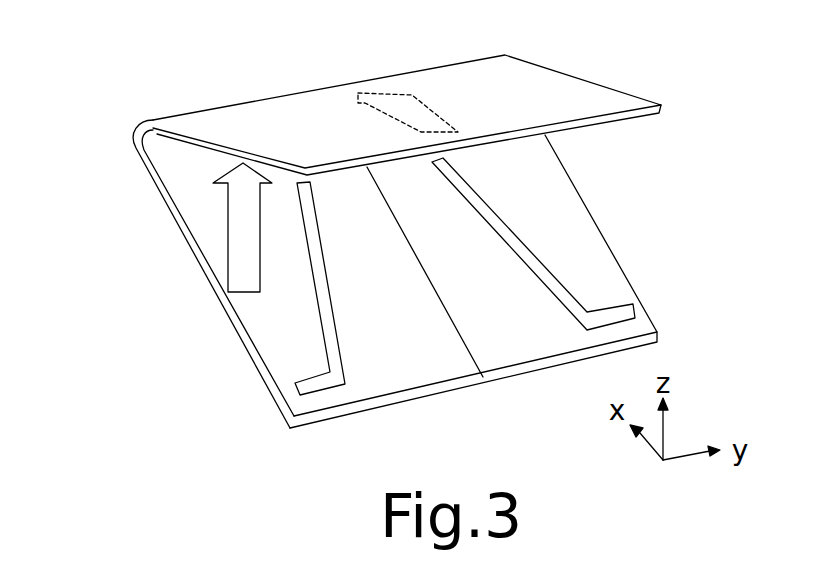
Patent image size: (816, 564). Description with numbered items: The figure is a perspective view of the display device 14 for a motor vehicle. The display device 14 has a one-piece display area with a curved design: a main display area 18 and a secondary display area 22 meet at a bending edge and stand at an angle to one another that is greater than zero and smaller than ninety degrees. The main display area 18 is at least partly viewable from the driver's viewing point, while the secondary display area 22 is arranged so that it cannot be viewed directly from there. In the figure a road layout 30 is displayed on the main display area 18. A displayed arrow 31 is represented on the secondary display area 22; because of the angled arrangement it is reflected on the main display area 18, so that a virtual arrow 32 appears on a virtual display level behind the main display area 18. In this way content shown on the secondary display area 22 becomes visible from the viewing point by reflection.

The display device 14 is at (108, 127).
The main display area 18 is at (585, 267).
The secondary display area 22 is at (602, 125).
The road layout 30 is at (533, 296).
The displayed arrow 31 is at (419, 107).
The virtual arrow 32 is at (240, 230).